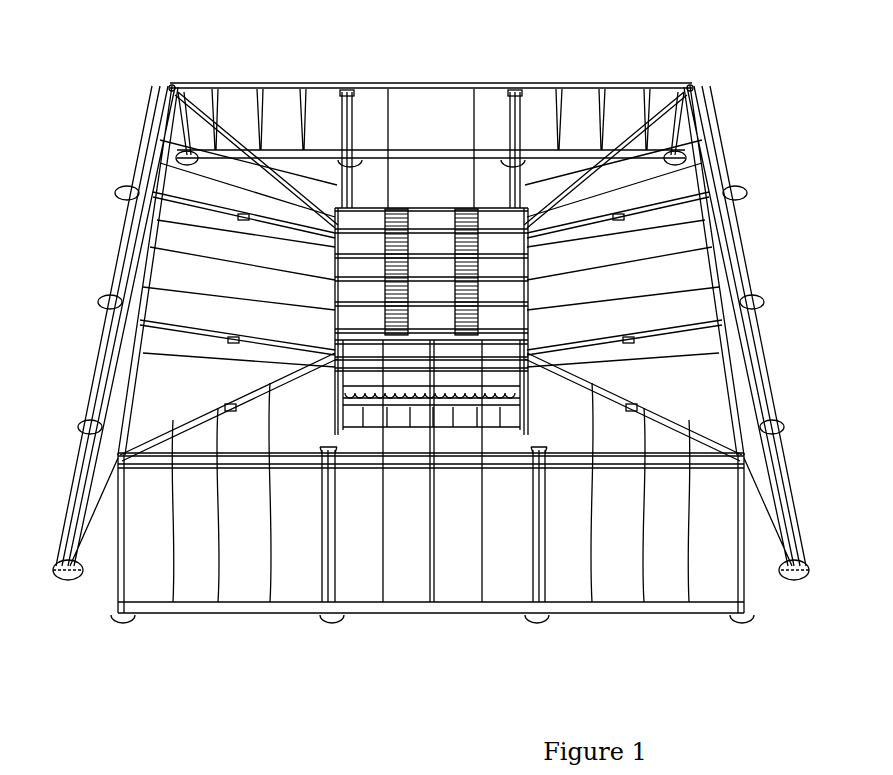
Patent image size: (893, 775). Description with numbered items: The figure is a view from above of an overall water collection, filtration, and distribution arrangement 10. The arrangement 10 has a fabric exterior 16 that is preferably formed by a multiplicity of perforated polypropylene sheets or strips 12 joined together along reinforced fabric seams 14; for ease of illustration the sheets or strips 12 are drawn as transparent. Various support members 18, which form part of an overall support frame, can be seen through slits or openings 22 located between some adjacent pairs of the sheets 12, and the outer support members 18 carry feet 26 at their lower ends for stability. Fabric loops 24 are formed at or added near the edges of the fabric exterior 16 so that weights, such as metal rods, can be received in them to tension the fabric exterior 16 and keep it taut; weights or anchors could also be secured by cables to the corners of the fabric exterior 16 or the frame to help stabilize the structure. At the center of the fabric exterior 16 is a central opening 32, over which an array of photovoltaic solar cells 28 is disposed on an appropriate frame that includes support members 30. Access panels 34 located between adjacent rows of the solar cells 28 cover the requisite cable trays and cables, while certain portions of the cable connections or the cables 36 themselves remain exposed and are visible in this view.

The water collection, filtration, and distribution arrangement 10 is at (737, 115).
The perforated polypropylene sheets or strips 12 is at (280, 103).
The reinforced fabric seams 14 is at (162, 277).
The fabric exterior 16 is at (427, 304).
The support members 18 is at (118, 575).
The slits or openings 22 is at (95, 548).
The fabric loops 24 is at (160, 617).
The feet 26 is at (83, 428).
The photovoltaic (solar) cells 28 is at (367, 217).
The support members 30 is at (377, 352).
The central opening 32 is at (530, 277).
The access panels 34 is at (458, 245).
The cables 36 is at (335, 285).